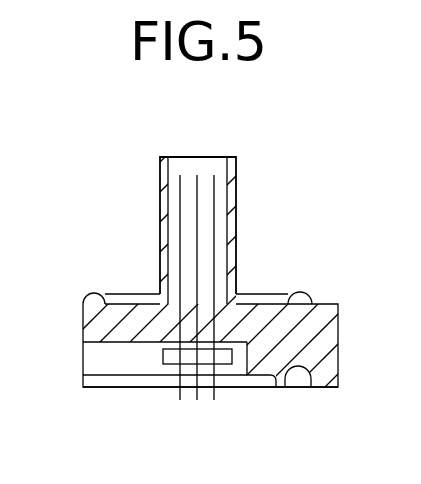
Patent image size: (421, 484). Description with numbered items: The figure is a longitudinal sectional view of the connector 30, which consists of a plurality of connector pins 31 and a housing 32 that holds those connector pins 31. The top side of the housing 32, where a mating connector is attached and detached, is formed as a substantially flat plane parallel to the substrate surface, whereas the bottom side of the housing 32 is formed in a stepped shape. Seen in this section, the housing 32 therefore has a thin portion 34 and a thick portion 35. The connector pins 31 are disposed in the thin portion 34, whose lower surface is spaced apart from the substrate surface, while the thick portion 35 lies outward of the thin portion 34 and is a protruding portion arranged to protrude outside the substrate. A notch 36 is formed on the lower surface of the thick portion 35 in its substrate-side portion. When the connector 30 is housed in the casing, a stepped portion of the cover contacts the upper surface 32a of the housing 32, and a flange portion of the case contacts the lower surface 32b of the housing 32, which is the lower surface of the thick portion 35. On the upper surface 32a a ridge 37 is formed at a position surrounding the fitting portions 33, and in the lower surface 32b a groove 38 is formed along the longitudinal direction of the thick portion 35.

The connector 30 is at (317, 152).
The connector pins 31 is at (180, 400).
The housing 32 is at (333, 327).
The upper surface 32a is at (328, 303).
The lower surface 32b is at (338, 388).
The fitting portions 33 is at (158, 173).
The thin portion 34 is at (92, 333).
The thick portion 35 is at (333, 361).
The notch 36 is at (268, 383).
The ridge 37 is at (82, 298).
The groove 38 is at (298, 388).